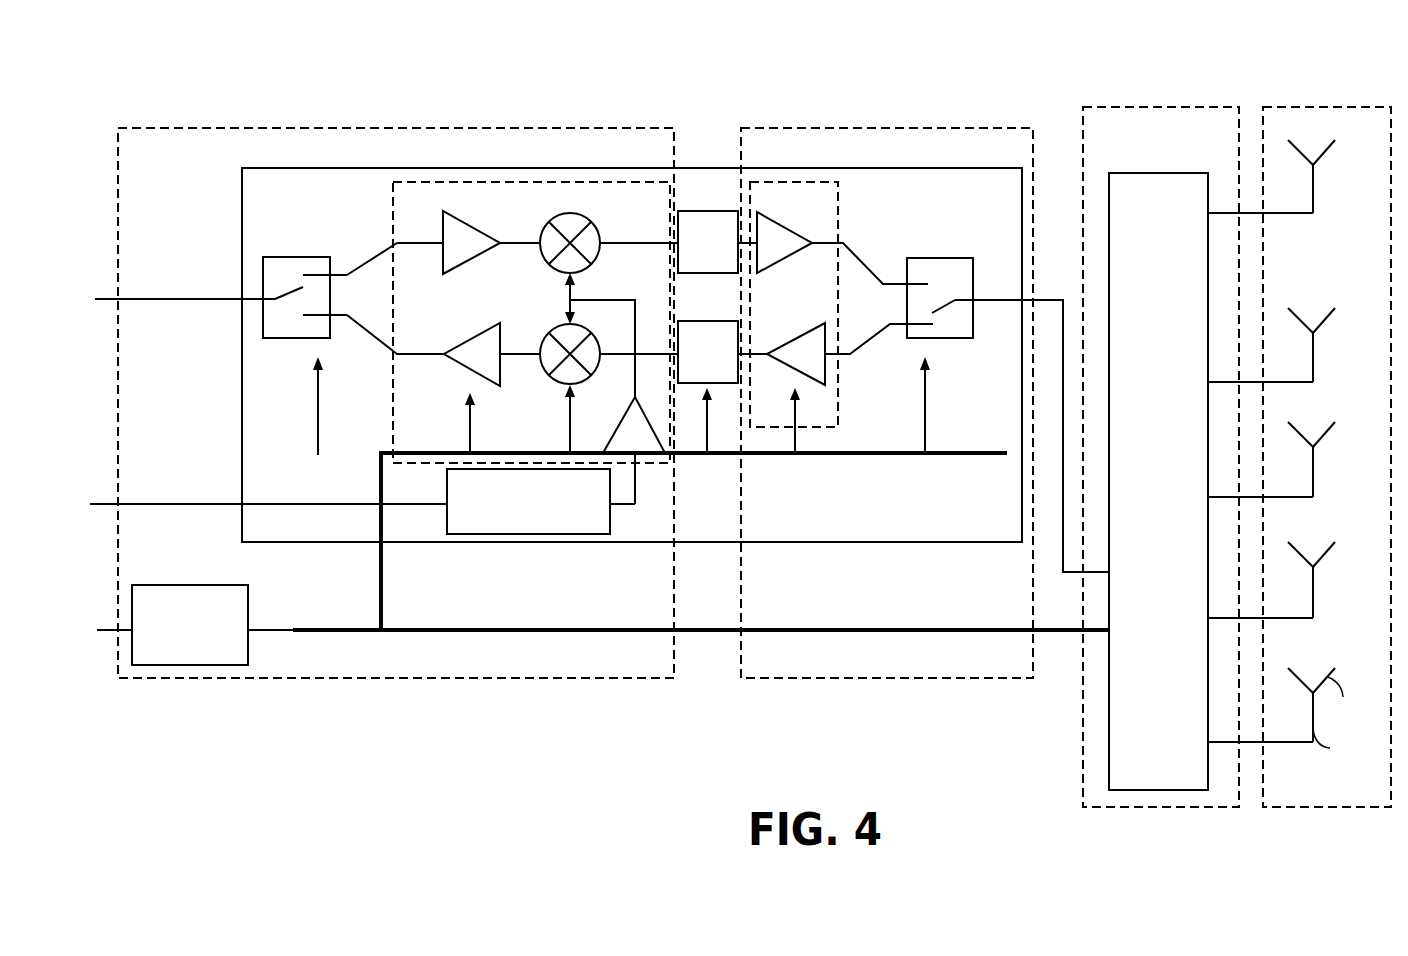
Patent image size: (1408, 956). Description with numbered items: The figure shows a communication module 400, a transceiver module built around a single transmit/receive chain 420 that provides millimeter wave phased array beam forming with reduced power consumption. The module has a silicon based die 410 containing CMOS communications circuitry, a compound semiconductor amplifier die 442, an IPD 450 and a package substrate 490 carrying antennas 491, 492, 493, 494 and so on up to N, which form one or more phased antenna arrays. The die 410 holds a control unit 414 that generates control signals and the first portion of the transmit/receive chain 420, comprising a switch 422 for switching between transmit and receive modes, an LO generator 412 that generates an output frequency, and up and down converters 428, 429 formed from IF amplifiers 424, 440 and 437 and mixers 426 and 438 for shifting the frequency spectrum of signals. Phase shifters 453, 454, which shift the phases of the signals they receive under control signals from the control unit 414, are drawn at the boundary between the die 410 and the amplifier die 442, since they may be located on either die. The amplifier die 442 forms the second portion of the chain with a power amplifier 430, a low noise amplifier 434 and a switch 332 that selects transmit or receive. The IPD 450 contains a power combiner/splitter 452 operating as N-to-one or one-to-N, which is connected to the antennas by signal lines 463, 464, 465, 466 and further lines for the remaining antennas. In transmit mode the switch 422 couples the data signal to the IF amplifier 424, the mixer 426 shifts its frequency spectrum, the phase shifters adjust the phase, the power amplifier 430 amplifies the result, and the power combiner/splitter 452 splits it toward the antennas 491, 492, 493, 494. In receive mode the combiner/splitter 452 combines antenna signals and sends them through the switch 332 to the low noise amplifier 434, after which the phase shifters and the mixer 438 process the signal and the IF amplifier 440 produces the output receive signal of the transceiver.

The communication module 400 is at (941, 44).
The transmit/receive chain 420 is at (338, 168).
The silicon based die 410 is at (635, 128).
The amplifier die 442 is at (900, 128).
The IPD 450 is at (1195, 107).
The substrate 490 is at (1338, 107).
The power combiner/splitter 452 is at (1185, 173).
The switch 422 is at (280, 257).
The IF amplifier 424 is at (466, 222).
The mixer 426 is at (579, 217).
The mixer 438 is at (565, 323).
The IF amplifier 440 is at (481, 333).
The IF amplifier 437 is at (626, 416).
The down converter 429 is at (393, 398).
The power amplifier 430 is at (775, 220).
The low noise amplifier 434 is at (813, 330).
The up converter 428 is at (838, 390).
The switch 332 is at (910, 258).
The phase shifter 453 is at (699, 273).
The phase shifter 454 is at (727, 383).
The control unit 414 is at (196, 585).
The LO generator 412 is at (575, 534).
The antenna 491 is at (1328, 148).
The antenna 492 is at (1328, 316).
The antenna 493 is at (1328, 430).
The antenna 494 is at (1328, 550).
The antenna signal line 463 is at (1278, 216).
The antenna signal line 464 is at (1278, 385).
The antenna signal line 465 is at (1278, 500).
The antenna signal line 466 is at (1278, 621).